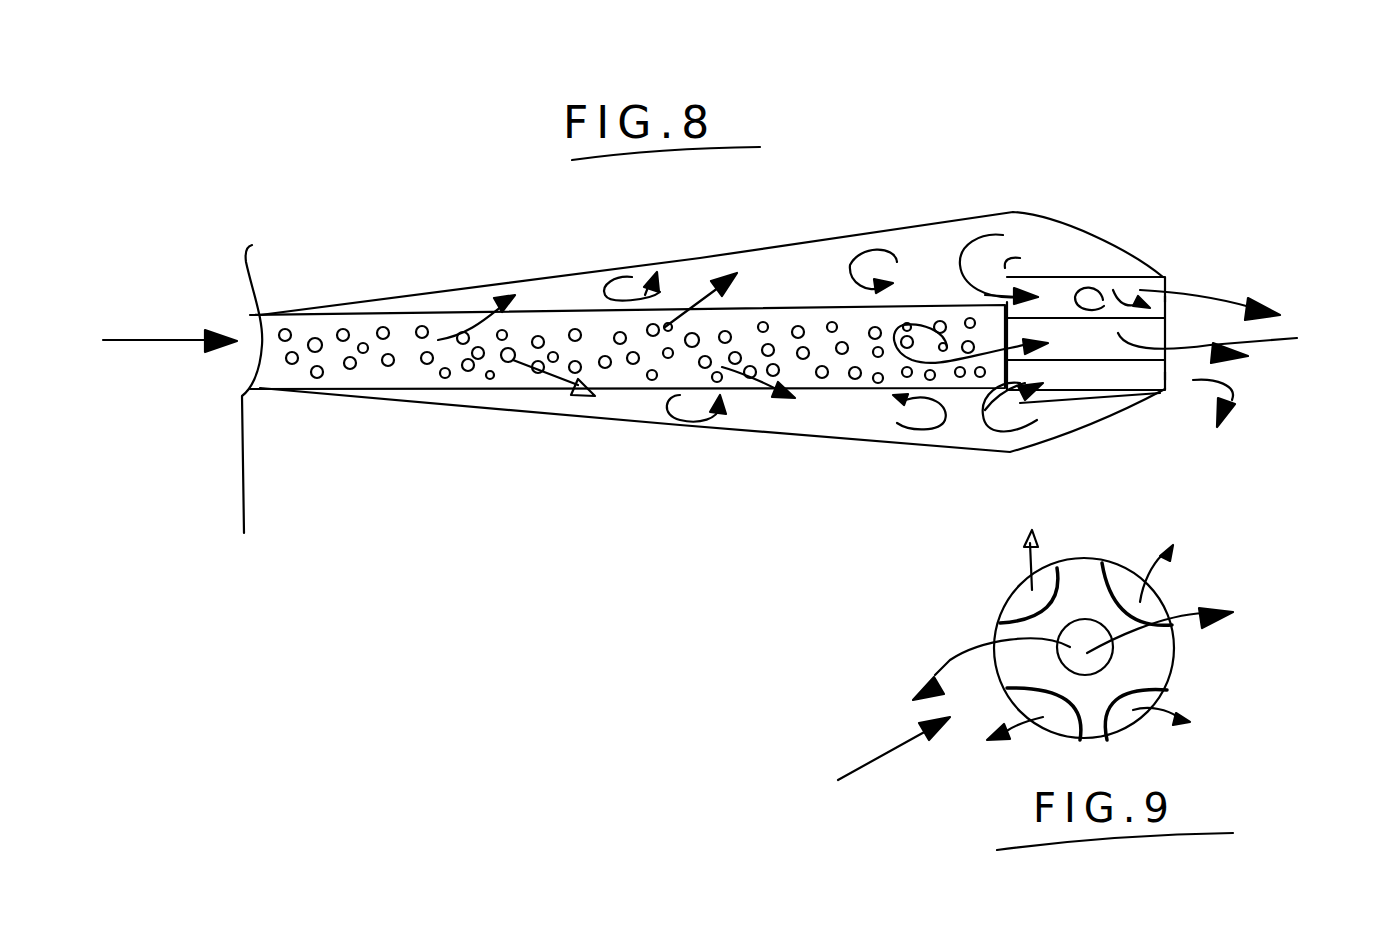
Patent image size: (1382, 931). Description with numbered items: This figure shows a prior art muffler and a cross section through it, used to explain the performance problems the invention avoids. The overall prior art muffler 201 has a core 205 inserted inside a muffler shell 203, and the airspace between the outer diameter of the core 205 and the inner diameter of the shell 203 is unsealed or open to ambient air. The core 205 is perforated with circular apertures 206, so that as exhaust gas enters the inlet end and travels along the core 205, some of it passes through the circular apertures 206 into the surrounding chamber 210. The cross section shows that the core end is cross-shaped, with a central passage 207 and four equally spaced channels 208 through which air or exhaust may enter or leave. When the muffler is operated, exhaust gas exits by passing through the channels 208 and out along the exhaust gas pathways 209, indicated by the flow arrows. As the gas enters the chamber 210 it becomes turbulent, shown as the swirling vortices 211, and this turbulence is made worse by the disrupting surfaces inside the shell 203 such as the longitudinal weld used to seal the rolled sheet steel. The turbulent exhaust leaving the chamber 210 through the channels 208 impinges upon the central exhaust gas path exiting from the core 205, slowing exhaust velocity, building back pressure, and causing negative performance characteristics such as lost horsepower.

In FIG. 8, the fluid dispensing nozzle assembly 201 is at (578, 518).
In FIG. 9, the fluid dispensing nozzle assembly 201 is at (866, 766).
In FIG. 8, the muffler shell 203 is at (522, 413).
In FIG. 9, the muffler shell 203 is at (1110, 557).
In FIG. 8, the core 205 is at (787, 305).
In FIG. 8, the circular apertures 206 is at (443, 372).
In FIG. 8, the central core 207 is at (1130, 283).
In FIG. 9, the central core 207 is at (1165, 670).
In FIG. 8, the channels 208 is at (1165, 305).
In FIG. 9, the channels 208 is at (1133, 723).
In FIG. 8, the exhaust gas pathways 209 is at (140, 338).
In FIG. 9, the exhaust gas pathways 209 is at (1023, 557).
In FIG. 8, the chamber 210 is at (643, 407).
In FIG. 8, the vortices 211 is at (887, 250).